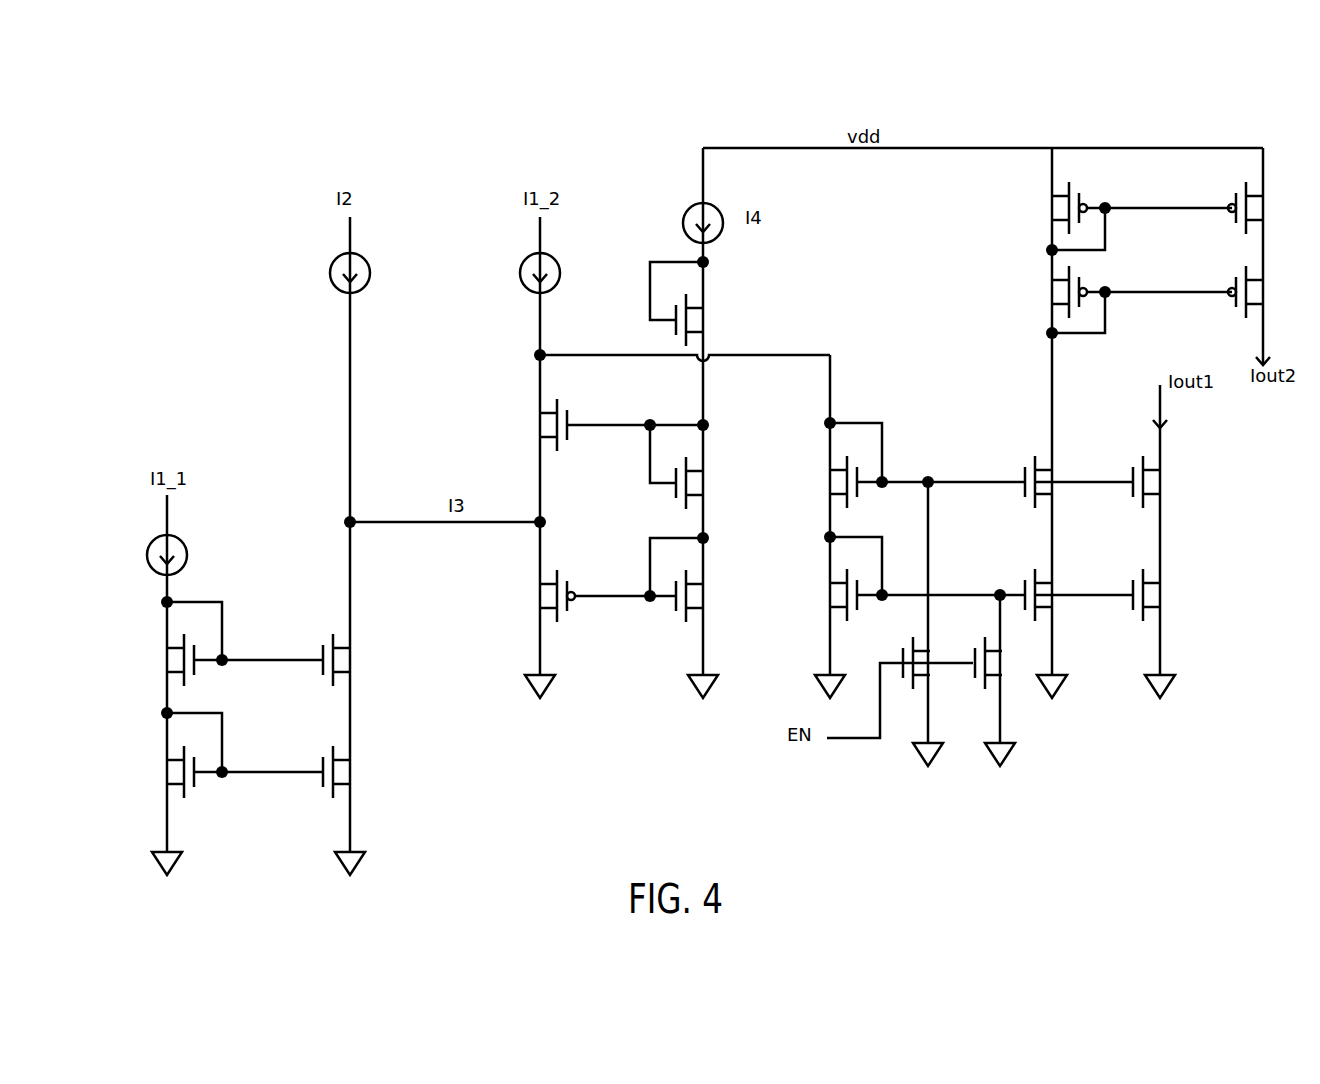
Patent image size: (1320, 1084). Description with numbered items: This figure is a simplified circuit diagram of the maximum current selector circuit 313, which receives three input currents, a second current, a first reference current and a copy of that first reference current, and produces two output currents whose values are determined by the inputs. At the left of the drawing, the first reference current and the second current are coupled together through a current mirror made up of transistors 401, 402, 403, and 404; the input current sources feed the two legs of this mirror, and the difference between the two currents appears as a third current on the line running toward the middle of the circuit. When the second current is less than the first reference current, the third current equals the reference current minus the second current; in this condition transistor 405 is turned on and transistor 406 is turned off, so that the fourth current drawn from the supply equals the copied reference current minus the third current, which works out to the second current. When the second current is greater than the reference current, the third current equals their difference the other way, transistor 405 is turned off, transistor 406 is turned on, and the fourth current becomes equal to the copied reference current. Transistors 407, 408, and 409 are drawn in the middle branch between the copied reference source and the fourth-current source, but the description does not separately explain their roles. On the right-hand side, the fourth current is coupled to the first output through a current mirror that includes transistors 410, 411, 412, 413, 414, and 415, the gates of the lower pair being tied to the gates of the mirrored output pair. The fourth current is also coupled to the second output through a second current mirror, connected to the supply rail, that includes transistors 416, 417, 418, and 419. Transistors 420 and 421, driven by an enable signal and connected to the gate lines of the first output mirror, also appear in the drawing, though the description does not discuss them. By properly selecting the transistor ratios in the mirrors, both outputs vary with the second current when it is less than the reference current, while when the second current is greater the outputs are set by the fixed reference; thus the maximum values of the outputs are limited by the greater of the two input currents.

The maximum current selector circuit 313 is at (1199, 133).
The transistor 401 is at (228, 660).
The transistor 402 is at (225, 755).
The transistor 403 is at (281, 644).
The transistor 404 is at (356, 772).
The transistor 405 is at (598, 425).
The transistor 406 is at (584, 596).
The transistor 407 is at (695, 304).
The transistor 408 is at (695, 467).
The transistor 409 is at (697, 580).
The transistor 410 is at (910, 465).
The transistor 411 is at (907, 579).
The transistor 412 is at (1079, 479).
The transistor 413 is at (1079, 595).
The transistor 414 is at (1172, 482).
The transistor 415 is at (1166, 595).
The transistor 416 is at (1117, 216).
The transistor 417 is at (1117, 299).
The transistor 418 is at (1228, 205).
The transistor 419 is at (1231, 290).
The enable transistor 420 is at (911, 677).
The enable transistor 421 is at (982, 677).